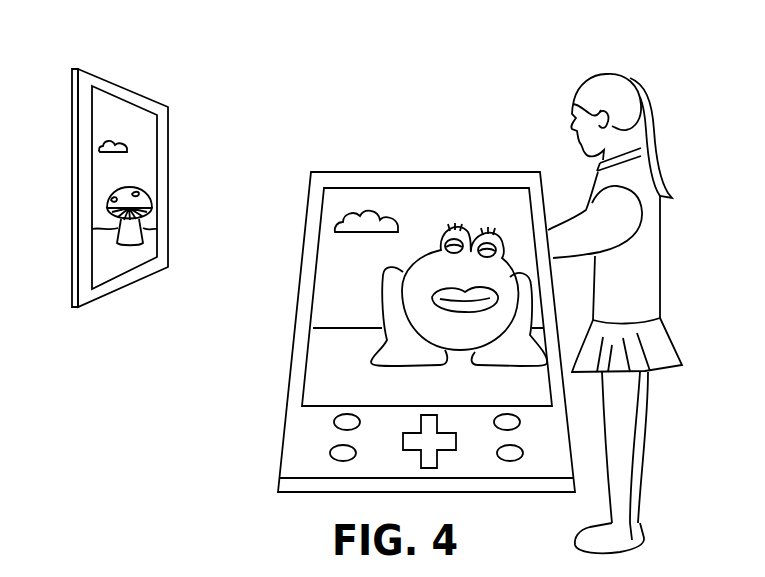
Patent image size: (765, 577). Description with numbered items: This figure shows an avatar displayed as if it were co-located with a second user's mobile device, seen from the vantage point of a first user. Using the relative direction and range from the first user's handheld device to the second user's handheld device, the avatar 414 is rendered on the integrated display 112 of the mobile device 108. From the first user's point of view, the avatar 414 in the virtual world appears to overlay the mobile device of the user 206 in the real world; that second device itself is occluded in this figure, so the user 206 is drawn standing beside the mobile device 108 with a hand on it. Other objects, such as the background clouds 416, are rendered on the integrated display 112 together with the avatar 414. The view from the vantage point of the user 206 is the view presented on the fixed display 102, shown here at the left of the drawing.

The fixed display 102 is at (90, 69).
The mobile device 108 is at (338, 172).
The integrated display 112 is at (312, 218).
The avatar 414 is at (382, 293).
The background clouds 416 is at (364, 233).
The user 206 is at (612, 73).